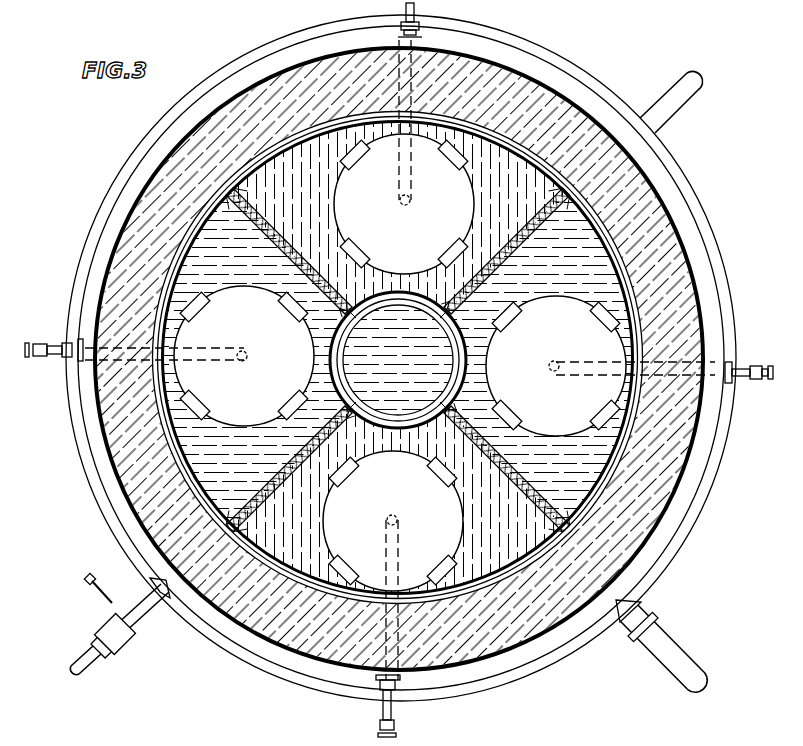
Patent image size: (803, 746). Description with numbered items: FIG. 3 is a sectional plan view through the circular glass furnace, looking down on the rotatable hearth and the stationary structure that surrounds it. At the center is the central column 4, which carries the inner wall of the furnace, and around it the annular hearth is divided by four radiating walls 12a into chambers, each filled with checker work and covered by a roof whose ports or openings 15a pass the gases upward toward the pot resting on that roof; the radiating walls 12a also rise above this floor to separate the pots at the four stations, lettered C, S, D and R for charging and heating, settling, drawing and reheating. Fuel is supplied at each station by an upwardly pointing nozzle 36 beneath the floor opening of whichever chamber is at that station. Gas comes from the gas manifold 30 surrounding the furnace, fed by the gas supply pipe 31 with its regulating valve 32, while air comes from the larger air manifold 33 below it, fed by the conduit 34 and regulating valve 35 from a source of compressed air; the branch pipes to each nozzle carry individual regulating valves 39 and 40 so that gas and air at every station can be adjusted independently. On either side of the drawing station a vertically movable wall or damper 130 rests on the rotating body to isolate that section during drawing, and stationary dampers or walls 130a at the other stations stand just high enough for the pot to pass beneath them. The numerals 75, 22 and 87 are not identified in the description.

The casing 75 is at (401, 380).
The larger manifold 33 is at (307, 34).
The manifold 30 is at (232, 86).
The radiating walls 12a is at (330, 480).
The central column 4 is at (397, 458).
The nozzle 36 is at (405, 206).
The vertically movable wall or damper 130 is at (496, 380).
The stationary dampers or walls 130a is at (310, 237).
The ports or openings 15a is at (458, 156).
The regulating valve 39 is at (42, 341).
The regulating valve 40 is at (66, 364).
The outlet pipe 22 is at (672, 92).
The conduit 34 is at (678, 652).
The regulating valve 35 is at (655, 625).
The gas supply pipe 31 is at (114, 652).
The regulating valve 32 is at (110, 617).
The valve stem 87 is at (105, 585).